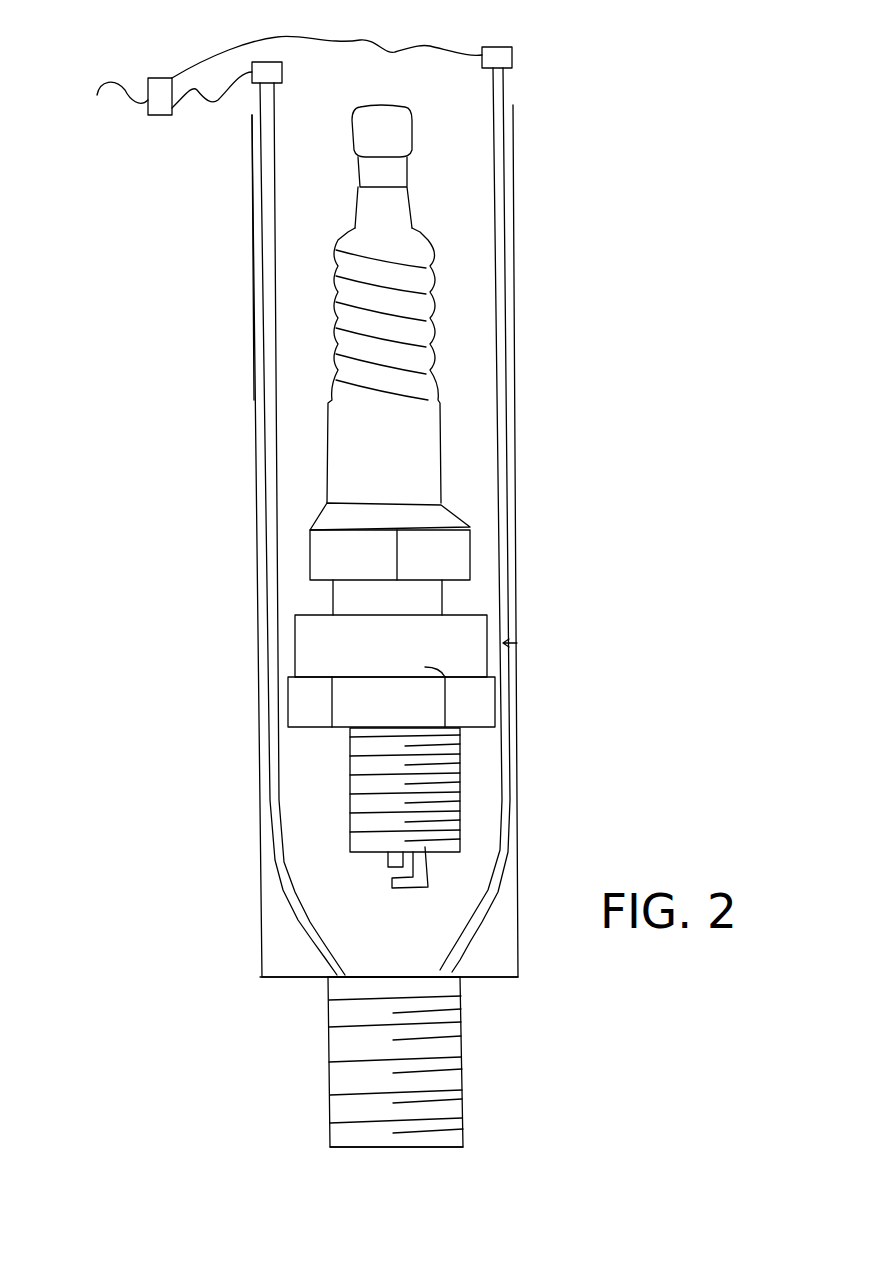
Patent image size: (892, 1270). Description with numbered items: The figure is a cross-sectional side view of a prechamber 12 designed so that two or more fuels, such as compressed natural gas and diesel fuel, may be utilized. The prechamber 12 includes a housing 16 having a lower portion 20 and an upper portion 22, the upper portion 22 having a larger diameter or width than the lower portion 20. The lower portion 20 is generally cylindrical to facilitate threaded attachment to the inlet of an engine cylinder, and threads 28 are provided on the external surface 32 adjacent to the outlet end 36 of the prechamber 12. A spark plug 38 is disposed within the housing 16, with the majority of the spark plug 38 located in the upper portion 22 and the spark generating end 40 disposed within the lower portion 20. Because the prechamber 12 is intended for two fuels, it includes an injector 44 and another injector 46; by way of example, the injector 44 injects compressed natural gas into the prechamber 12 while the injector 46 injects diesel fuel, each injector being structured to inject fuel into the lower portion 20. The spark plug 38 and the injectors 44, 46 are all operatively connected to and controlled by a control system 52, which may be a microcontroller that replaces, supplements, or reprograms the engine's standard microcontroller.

The prechamber 12 is at (137, 537).
The housing 16 is at (248, 342).
The lower portion 20 is at (328, 990).
The upper portion 22 is at (250, 192).
The threads 28 is at (463, 1040).
The external surface 32 is at (462, 1006).
The outlet end 36 is at (373, 1147).
The spark plug 38 is at (408, 465).
The spark generating end 40 is at (392, 878).
The injector 44 is at (301, 56).
The injector 46 is at (512, 60).
The control system 52 is at (281, 96).